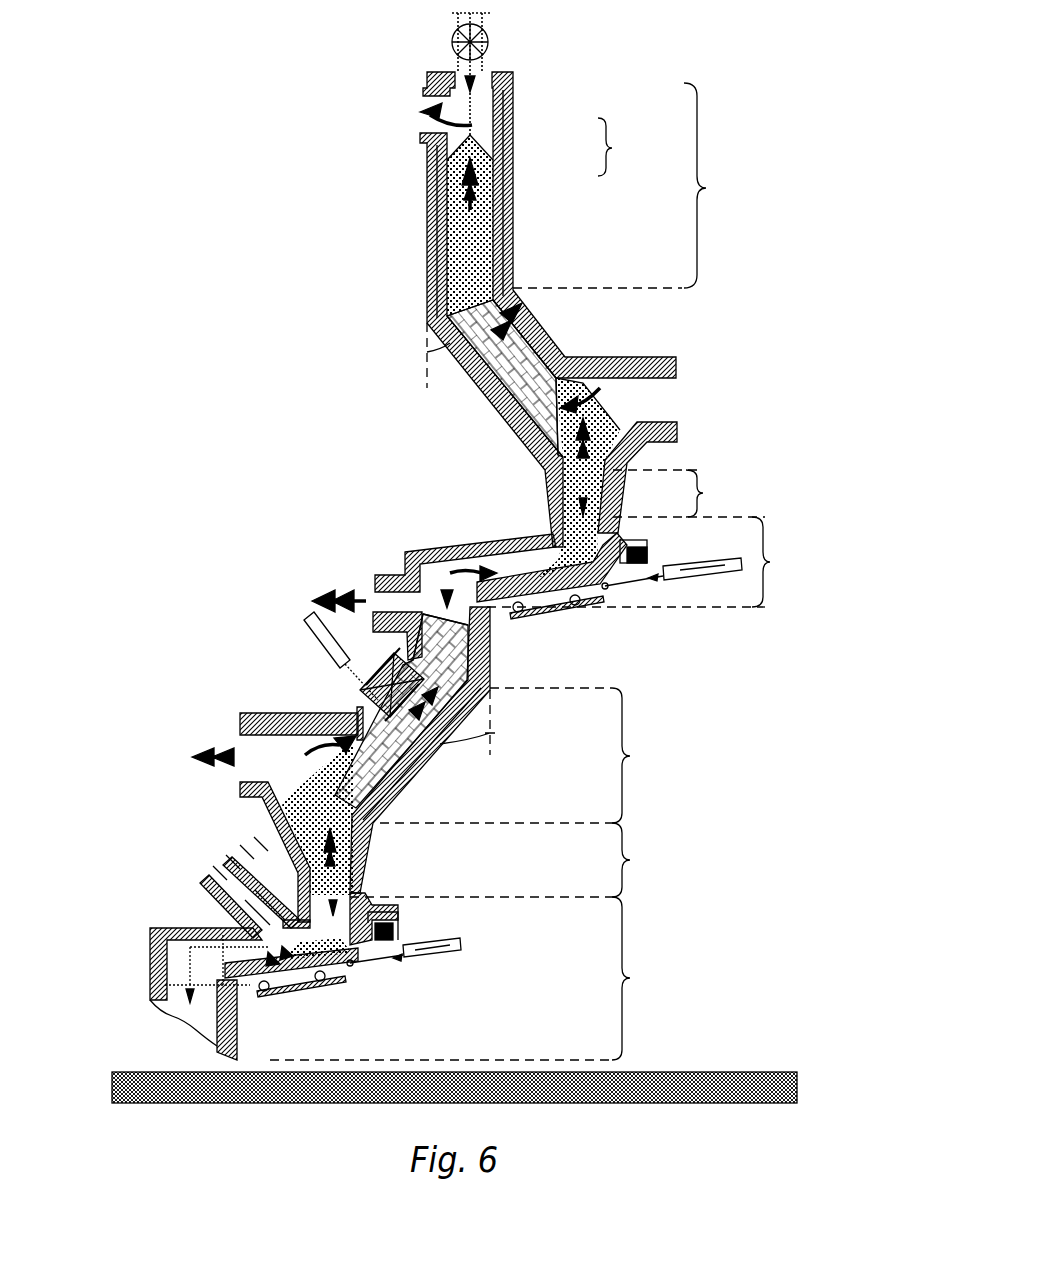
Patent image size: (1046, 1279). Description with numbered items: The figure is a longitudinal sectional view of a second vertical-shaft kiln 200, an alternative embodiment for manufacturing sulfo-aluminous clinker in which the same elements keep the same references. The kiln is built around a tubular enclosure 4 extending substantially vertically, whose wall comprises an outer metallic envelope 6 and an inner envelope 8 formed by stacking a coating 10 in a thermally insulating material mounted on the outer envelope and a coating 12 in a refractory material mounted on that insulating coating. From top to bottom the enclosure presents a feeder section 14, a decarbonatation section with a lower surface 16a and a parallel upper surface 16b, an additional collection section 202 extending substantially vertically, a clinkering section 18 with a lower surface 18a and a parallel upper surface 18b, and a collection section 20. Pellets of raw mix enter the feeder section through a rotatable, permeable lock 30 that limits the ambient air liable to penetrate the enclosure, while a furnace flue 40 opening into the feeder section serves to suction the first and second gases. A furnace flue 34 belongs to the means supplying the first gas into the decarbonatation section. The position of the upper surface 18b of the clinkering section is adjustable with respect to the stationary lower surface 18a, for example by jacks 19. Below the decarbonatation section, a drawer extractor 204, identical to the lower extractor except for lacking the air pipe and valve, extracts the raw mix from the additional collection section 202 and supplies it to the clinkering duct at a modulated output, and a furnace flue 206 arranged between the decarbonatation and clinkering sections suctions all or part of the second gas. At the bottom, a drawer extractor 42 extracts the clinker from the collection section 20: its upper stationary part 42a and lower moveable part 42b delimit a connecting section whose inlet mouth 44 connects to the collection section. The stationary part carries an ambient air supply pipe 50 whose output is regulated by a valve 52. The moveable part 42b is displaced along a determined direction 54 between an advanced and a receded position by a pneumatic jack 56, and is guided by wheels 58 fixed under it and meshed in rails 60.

The second vertical-shaft kiln 200 is at (233, 185).
The lock 30 is at (457, 30).
The furnace flue 40 is at (422, 106).
The coating in a thermally insulating material 10 is at (513, 121).
The coating in a refractory material 12 is at (500, 152).
The inner envelope 8 is at (524, 309).
The feeder section 14 is at (581, 309).
The tubular enclosure 4 is at (516, 234).
The outer metallic envelope 6 is at (513, 250).
The lower surface of the decarbonatation section 16a is at (468, 392).
The upper surface of the decarbonatation section 16b is at (553, 329).
The furnace flue 34 is at (677, 356).
The additional collection section 202 is at (660, 455).
The furnace flue 206 is at (378, 573).
The drawer extractor 204 is at (647, 568).
The jack 19 is at (303, 621).
The clinkering section 18 is at (499, 750).
The lower surface of the clinkering section 18a is at (419, 795).
The upper surface of the clinkering section 18b is at (437, 750).
The collection section 20 is at (447, 831).
The inlet mouth 44 is at (355, 879).
The drawer extractor 42 is at (373, 986).
The upper stationary part 42a is at (161, 929).
The lower moveable part 42b is at (277, 980).
The ambient air supply pipe 50 is at (267, 878).
The valve 52 is at (222, 882).
The determined direction 54 is at (392, 966).
The pneumatic jack 56 is at (453, 951).
The wheels 58 is at (322, 988).
The rails 60 is at (282, 993).